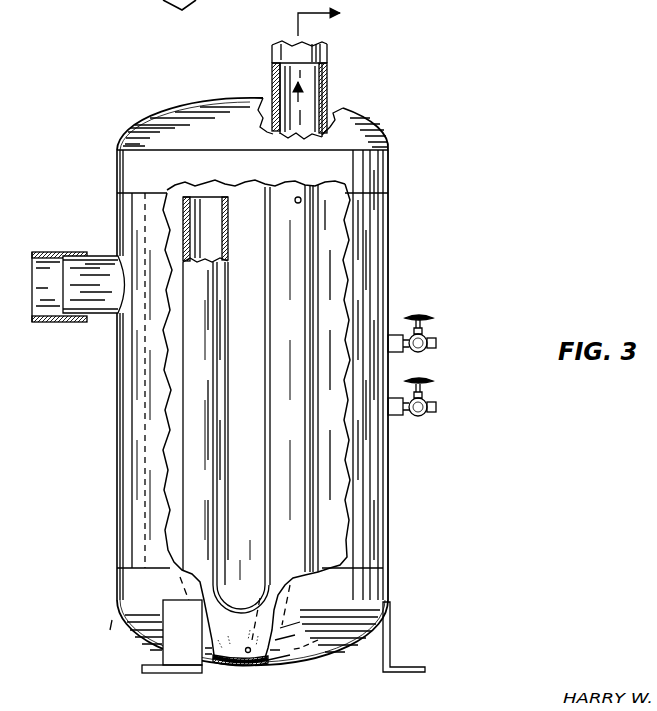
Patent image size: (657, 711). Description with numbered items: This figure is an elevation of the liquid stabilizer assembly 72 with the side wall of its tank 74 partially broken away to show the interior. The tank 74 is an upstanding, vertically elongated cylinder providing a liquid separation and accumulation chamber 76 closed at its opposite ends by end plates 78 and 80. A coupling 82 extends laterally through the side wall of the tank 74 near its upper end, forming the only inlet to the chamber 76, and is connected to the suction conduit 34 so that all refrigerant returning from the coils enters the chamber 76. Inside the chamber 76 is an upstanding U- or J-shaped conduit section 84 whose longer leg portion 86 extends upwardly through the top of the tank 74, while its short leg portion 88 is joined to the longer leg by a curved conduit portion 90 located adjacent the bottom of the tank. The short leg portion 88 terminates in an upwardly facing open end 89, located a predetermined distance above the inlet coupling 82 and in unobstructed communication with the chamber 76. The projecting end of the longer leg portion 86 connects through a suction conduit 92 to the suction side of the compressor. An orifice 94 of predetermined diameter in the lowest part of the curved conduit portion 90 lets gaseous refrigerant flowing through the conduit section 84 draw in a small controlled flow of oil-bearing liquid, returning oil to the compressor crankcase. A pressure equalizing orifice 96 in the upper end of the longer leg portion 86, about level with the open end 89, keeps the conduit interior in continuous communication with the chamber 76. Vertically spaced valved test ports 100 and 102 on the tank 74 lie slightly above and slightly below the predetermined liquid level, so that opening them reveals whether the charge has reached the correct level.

The suction conduit 34 is at (45, 250).
The liquid stabilizer assembly 72 is at (407, 150).
The tank 74 is at (392, 220).
The liquid separation and accumulation chamber 76 is at (337, 296).
The end plate 78 is at (170, 108).
The end plate 80 is at (132, 633).
The coupling 82 is at (102, 313).
The conduit section 84 is at (322, 508).
The longer leg portion 86 is at (322, 93).
The short leg portion 88 is at (213, 287).
The open end 89 is at (210, 208).
The curved conduit portion 90 is at (305, 650).
The suction conduit 92 is at (327, 55).
The orifice 94 is at (248, 653).
The pressure equalizing orifice 96 is at (295, 203).
The valved test port 100 is at (432, 338).
The valved test port 102 is at (432, 402).